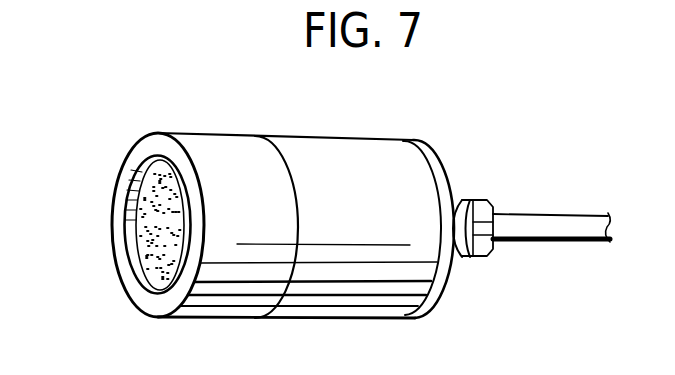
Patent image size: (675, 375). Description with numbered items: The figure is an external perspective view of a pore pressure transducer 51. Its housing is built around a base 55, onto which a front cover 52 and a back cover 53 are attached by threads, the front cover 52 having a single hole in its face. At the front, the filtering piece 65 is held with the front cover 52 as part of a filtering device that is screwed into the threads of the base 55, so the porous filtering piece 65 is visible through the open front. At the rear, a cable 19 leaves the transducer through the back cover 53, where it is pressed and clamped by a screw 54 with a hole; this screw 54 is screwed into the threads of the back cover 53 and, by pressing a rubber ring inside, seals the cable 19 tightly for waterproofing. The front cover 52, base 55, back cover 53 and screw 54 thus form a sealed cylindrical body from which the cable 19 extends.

The pore pressure transducer 51 is at (512, 112).
The front cover 52 is at (208, 160).
The back cover 53 is at (428, 148).
The screw with a hole 54 is at (488, 200).
The base 55 is at (350, 160).
The filtering piece 65 is at (148, 218).
The cable 19 is at (560, 226).